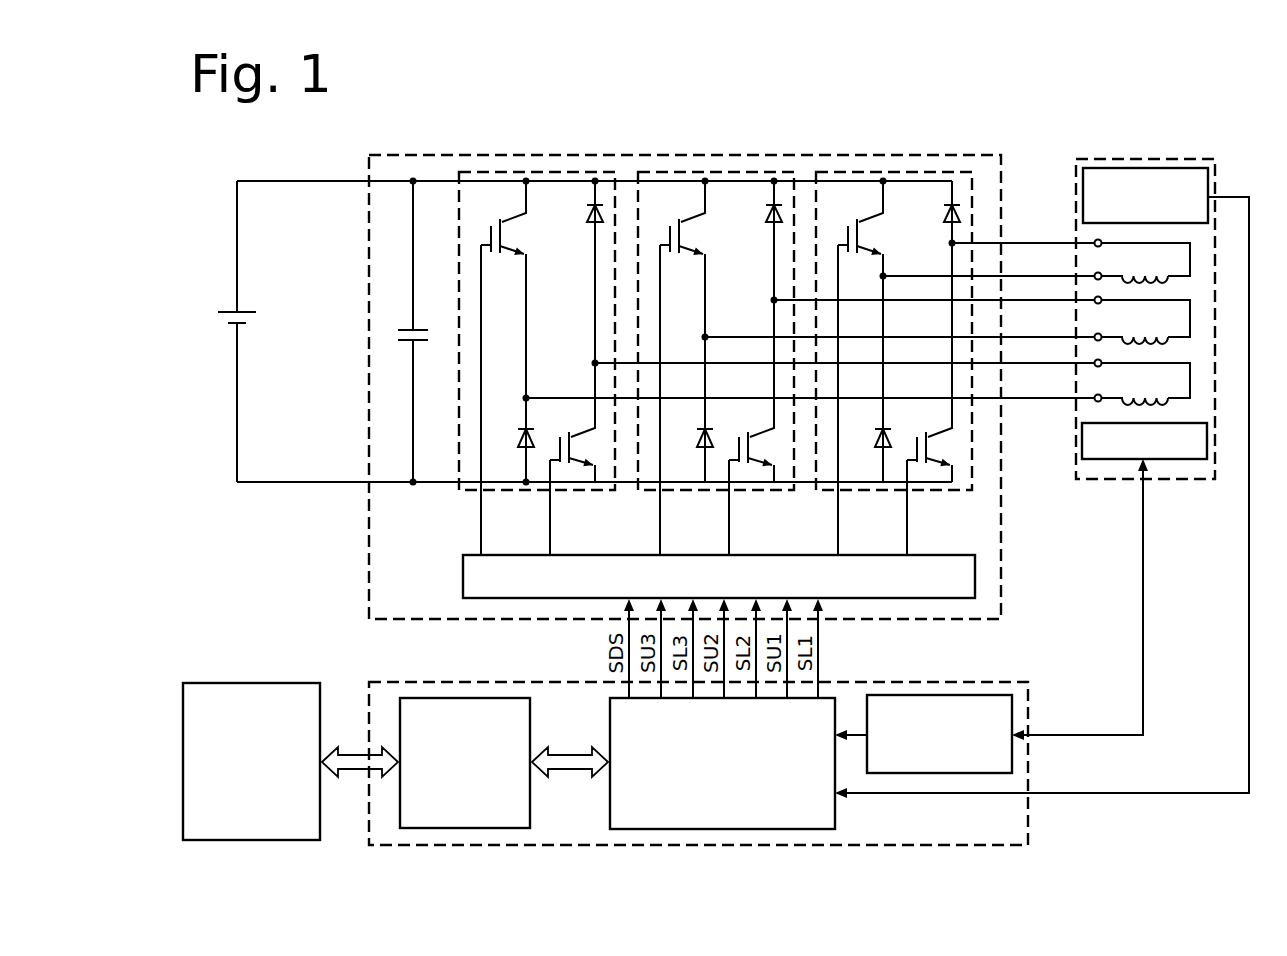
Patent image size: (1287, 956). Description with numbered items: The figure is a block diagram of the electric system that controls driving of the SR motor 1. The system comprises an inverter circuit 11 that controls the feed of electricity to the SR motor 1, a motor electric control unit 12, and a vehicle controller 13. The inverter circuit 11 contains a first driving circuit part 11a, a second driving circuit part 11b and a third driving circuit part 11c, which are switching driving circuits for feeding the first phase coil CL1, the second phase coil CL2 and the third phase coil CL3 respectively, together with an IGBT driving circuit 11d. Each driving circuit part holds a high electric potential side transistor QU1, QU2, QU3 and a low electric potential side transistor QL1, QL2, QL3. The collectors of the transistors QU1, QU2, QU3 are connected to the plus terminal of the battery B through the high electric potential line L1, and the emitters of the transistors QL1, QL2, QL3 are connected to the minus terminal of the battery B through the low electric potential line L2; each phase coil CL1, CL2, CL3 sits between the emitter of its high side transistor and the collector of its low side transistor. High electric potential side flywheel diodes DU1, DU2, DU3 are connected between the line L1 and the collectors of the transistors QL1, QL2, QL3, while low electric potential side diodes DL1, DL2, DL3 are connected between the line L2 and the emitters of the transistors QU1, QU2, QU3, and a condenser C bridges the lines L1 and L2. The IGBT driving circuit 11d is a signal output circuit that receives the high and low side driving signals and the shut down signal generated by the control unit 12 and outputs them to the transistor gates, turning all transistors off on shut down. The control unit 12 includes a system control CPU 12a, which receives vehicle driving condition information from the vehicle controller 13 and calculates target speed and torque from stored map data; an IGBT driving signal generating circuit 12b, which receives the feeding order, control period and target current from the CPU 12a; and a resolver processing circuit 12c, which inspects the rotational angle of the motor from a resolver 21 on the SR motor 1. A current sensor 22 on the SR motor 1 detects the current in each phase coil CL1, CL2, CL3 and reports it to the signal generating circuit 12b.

The SR motor 1 is at (1103, 485).
The inverter circuit 11 is at (1005, 174).
The first driving circuit part 11a is at (894, 300).
The second driving circuit part 11b is at (716, 300).
The third driving circuit part 11c is at (559, 172).
The IGBT driving circuit 11d is at (463, 577).
The motor electric control unit 12 is at (1014, 681).
The system control CPU 12a is at (483, 698).
The IGBT driving signal generating circuit 12b is at (835, 815).
The resolver processing circuit 12c is at (922, 695).
The vehicle controller 13 is at (265, 683).
The resolver 21 is at (1082, 441).
The current sensor 22 is at (1190, 168).
The battery B is at (246, 311).
The condenser C is at (418, 328).
The high electric potential line L1 is at (313, 181).
The low electric potential line L2 is at (308, 484).
The first phase coil CL1 is at (1143, 262).
The second phase coil CL2 is at (1143, 321).
The third phase coil CL3 is at (1143, 383).
The high electric potential side switching transistor QU1 is at (850, 367).
The high electric potential side switching transistor QU2 is at (672, 367).
The high electric potential side switching transistor QU3 is at (524, 212).
The low electric potential side switching transistor QL1 is at (917, 399).
The low electric potential side switching transistor QL2 is at (739, 427).
The low electric potential side switching transistor QL3 is at (590, 433).
The first high electric potential side flywheel diode DU1 is at (927, 220).
The second high electric potential side flywheel diode DU2 is at (749, 241).
The third high electric potential side flywheel diode DU3 is at (588, 212).
The first low electric potential side diode DL1 is at (902, 378).
The second low electric potential side diode DL2 is at (724, 408).
The third low electric potential side diode DL3 is at (528, 425).